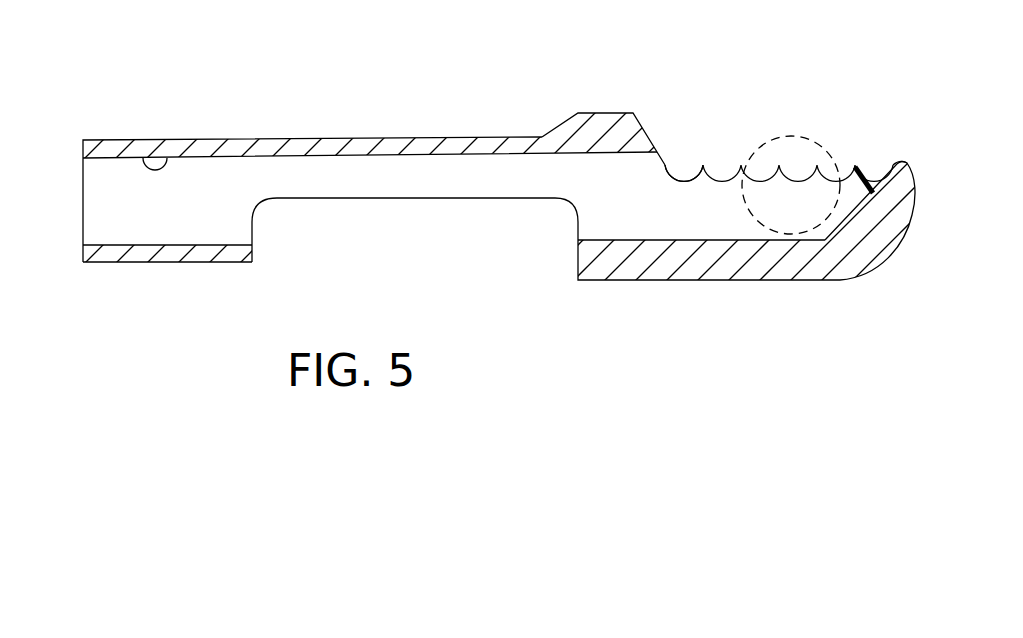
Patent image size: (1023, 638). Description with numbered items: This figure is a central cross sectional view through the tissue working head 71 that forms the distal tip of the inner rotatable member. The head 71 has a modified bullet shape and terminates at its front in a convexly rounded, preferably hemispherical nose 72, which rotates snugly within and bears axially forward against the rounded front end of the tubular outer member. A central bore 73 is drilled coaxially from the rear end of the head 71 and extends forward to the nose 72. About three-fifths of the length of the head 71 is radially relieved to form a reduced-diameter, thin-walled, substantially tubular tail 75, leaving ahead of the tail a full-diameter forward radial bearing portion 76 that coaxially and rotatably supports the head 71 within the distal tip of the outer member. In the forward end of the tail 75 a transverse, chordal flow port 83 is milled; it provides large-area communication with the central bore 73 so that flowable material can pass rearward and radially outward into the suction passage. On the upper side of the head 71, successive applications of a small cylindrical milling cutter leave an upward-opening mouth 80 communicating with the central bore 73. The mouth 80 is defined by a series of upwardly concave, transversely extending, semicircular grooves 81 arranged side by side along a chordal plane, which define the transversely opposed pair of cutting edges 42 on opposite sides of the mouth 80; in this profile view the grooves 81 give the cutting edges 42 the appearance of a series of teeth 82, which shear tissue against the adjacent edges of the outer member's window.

The central bore 73 is at (156, 166).
The tubular tail 75 is at (150, 263).
The flow port 83 is at (252, 223).
The forward radial bearing portion 76 is at (600, 112).
The tissue working head 71 is at (673, 286).
The convexly rounded nose 72 is at (910, 238).
The cutting edges 42 is at (710, 170).
The mouth 80 is at (667, 162).
The teeth 82 is at (790, 160).
The grooves 81 is at (890, 164).